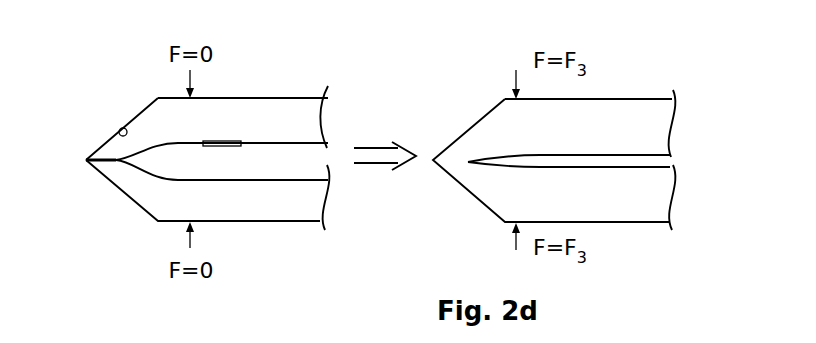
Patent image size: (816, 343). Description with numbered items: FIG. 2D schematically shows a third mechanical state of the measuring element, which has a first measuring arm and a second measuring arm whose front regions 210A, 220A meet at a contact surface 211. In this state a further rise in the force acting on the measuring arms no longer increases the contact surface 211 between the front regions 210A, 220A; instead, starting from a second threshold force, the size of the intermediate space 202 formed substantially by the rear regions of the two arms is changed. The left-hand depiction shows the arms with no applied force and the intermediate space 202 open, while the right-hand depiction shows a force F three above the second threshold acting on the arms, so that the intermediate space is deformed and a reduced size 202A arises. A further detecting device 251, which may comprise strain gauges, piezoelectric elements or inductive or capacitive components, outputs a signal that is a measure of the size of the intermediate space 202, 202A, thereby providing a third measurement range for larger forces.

The front region of the first measuring arm 210A is at (158, 97).
The front region of the second measuring arm 220A is at (128, 197).
The contact surface 211 is at (121, 128).
The intermediate space 202 is at (289, 144).
The reduced size of the intermediate space 202A is at (650, 162).
The further detecting device 251 is at (227, 152).